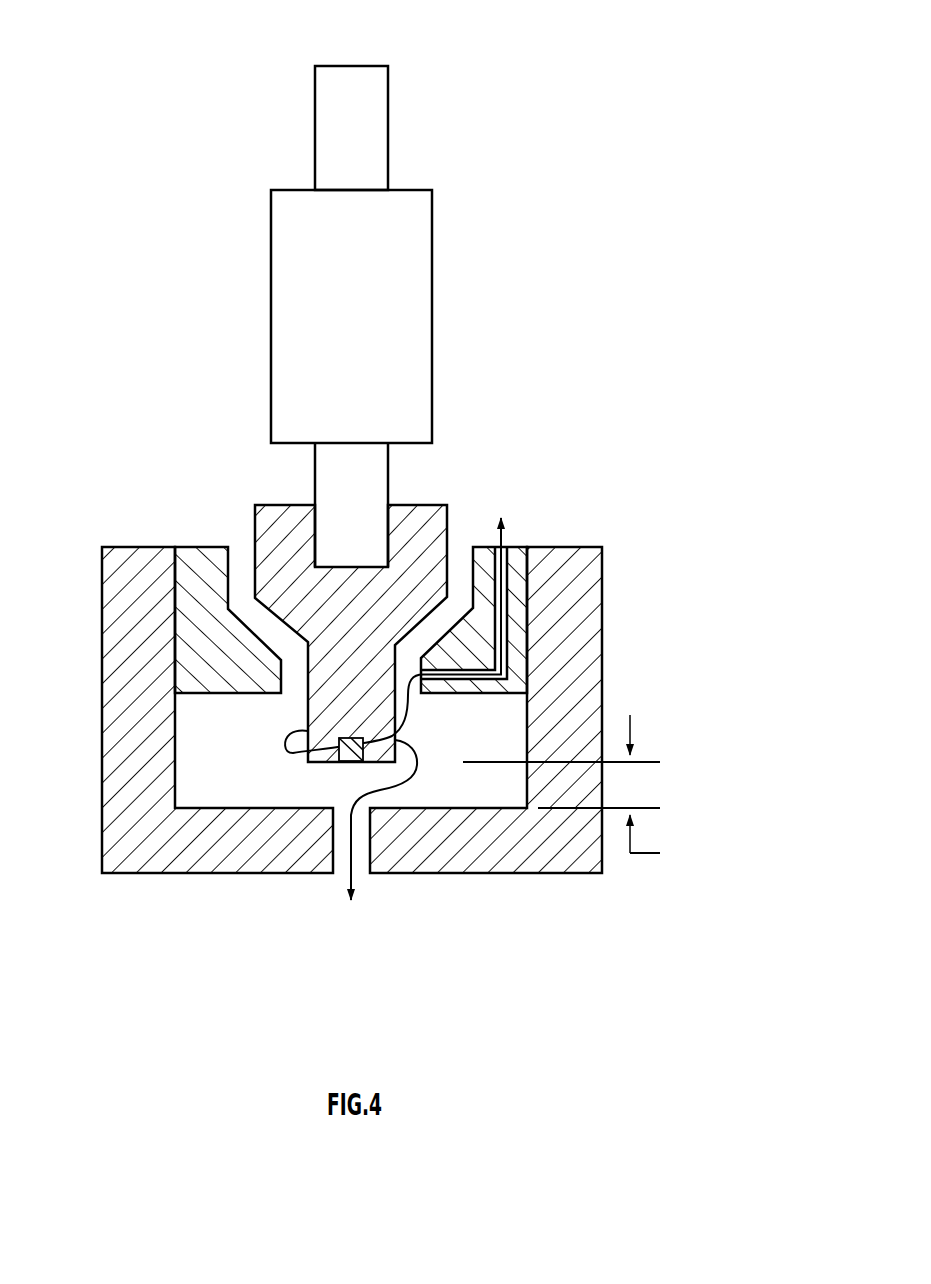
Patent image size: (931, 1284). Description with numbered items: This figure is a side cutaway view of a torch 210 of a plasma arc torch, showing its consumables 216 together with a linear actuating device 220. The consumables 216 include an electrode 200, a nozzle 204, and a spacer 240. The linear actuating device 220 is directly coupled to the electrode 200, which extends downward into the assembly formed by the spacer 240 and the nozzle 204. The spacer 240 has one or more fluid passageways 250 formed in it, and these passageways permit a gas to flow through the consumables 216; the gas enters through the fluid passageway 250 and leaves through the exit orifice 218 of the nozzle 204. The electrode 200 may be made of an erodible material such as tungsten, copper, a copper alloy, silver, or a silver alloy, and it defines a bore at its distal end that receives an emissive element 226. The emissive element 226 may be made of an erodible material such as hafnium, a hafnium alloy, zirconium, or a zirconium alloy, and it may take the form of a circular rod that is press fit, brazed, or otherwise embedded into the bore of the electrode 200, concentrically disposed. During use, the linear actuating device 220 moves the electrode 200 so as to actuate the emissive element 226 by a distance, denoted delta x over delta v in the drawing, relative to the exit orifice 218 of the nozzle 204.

The torch 210 is at (568, 70).
The linear actuating device 220 is at (420, 262).
The consumables 216 is at (590, 320).
The electrode 200 is at (322, 481).
The spacer 240 is at (205, 551).
The nozzle 204 is at (597, 578).
The fluid passageway 250 is at (513, 668).
The emissive element 226 is at (343, 743).
The exit orifice 218 is at (374, 890).